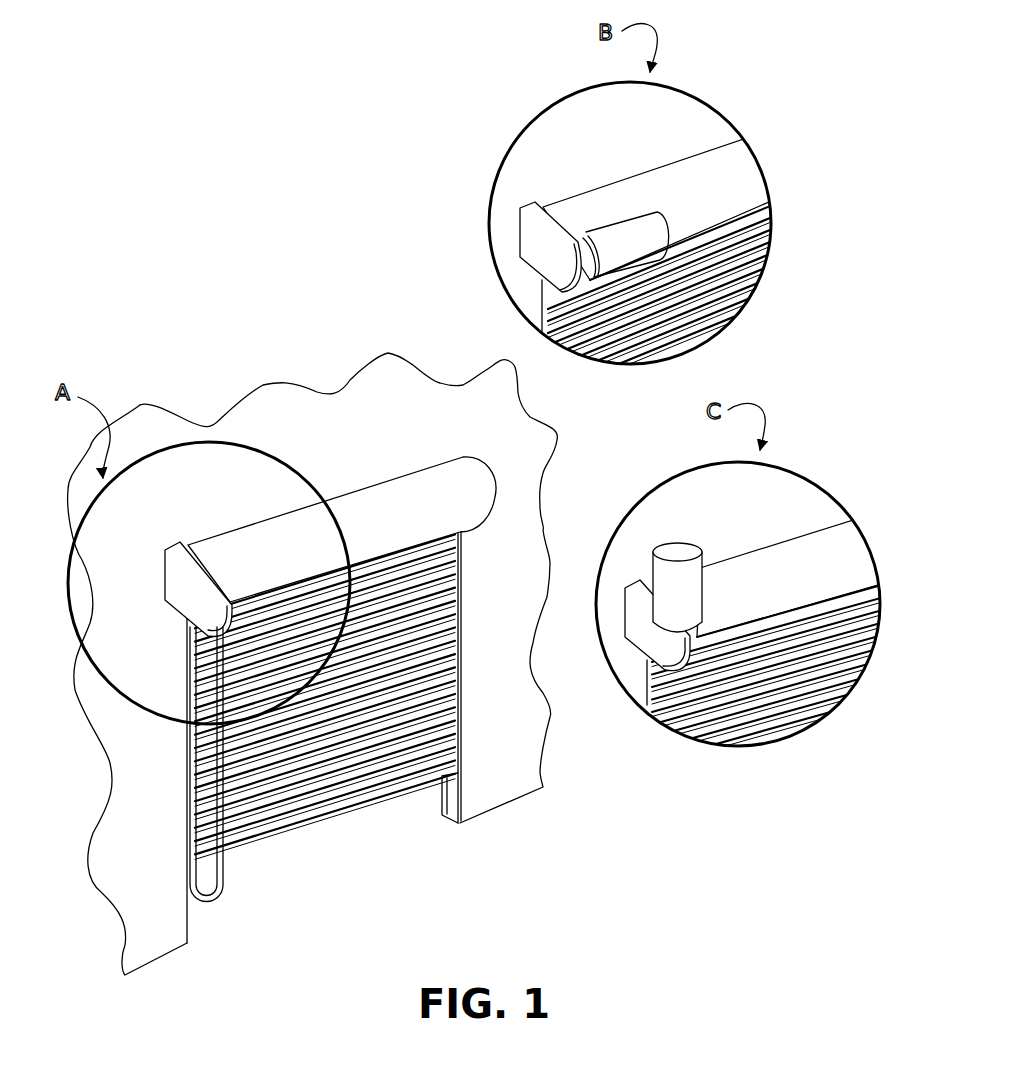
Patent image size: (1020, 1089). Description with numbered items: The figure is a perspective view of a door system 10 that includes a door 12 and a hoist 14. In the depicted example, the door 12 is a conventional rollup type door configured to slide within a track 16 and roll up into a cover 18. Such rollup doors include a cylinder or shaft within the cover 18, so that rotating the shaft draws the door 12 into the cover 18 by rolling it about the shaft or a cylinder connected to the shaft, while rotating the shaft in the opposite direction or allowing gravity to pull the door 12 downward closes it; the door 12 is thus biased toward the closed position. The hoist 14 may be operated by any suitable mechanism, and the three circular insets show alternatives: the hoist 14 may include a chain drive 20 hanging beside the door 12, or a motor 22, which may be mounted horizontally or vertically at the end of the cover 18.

The door system 10 is at (281, 330).
The door 12 is at (350, 783).
The hoist 14 is at (172, 585).
The track 16 is at (445, 817).
The cover 18 is at (383, 510).
The chain drive 20 is at (188, 875).
The motor 22 is at (601, 212).